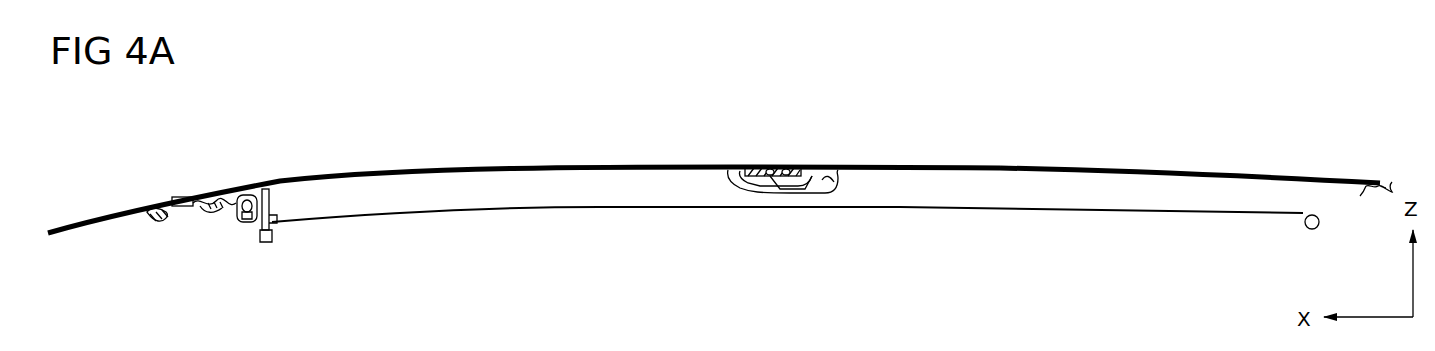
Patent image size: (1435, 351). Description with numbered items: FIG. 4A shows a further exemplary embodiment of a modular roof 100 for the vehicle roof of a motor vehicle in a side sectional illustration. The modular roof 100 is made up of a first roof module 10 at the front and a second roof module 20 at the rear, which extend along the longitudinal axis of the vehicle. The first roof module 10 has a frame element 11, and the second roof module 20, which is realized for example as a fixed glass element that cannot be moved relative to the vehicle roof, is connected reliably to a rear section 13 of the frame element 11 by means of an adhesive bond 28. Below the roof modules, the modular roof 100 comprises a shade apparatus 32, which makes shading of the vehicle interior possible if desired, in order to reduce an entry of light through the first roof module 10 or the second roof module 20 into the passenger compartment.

The modular roof 100 is at (330, 110).
The first roof module 10 is at (502, 150).
The frame element 11 is at (738, 193).
The rear section 13 is at (708, 140).
The second roof module 20 is at (1083, 155).
The adhesive bond 28 is at (815, 143).
The shade apparatus 32 is at (944, 212).